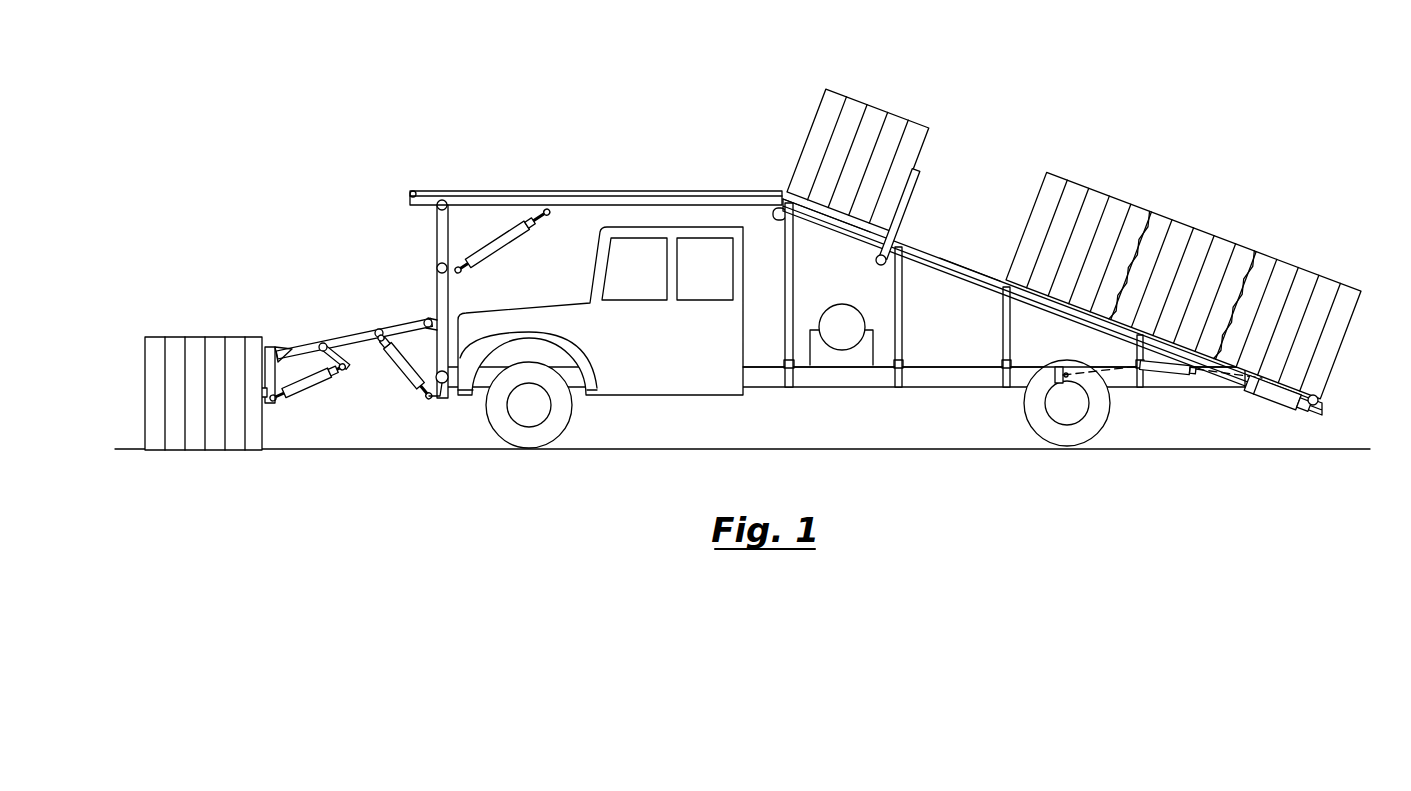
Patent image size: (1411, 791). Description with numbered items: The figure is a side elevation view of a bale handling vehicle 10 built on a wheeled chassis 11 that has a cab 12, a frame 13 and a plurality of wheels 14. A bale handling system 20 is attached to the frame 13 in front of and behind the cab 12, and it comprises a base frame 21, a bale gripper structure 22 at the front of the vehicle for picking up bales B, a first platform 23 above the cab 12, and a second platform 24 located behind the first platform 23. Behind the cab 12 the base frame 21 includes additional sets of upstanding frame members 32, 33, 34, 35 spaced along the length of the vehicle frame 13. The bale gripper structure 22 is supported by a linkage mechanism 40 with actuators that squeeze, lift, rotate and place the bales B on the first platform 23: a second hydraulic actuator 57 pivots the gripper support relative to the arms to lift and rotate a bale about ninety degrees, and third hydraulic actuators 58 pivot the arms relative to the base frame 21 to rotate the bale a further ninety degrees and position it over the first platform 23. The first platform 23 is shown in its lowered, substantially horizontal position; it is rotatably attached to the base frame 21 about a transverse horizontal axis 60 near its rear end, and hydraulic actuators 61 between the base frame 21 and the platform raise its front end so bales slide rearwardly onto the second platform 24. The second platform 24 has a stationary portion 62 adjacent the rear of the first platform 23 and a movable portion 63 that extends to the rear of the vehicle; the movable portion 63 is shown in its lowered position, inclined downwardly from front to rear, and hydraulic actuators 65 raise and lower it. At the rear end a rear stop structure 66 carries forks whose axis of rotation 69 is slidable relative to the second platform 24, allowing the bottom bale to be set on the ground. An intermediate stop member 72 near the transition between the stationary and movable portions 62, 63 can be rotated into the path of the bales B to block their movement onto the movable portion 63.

The bale handling vehicle 10 is at (380, 468).
The wheeled chassis 11 is at (765, 388).
The cab 12 is at (675, 362).
The frame 13 is at (968, 380).
The wheels 14 is at (538, 440).
The bale handling system 20 is at (360, 280).
The base frame 21 is at (437, 246).
The bale gripper structure 22 is at (233, 365).
The first platform 23 is at (530, 192).
The second platform 24 is at (943, 254).
The upstanding frame member 32 is at (793, 298).
The upstanding frame member 33 is at (900, 332).
The upstanding frame member 34 is at (1010, 336).
The upstanding frame member 35 is at (1137, 352).
The linkage mechanism 40 is at (358, 338).
The second hydraulic actuator 57 is at (333, 380).
The third hydraulic actuator 58 is at (406, 378).
The transverse horizontal axis 60 is at (778, 203).
The hydraulic actuator 61 is at (495, 248).
The stationary portion 62 is at (840, 222).
The movable portion 63 is at (965, 272).
The hydraulic actuator 65 is at (1170, 362).
The rear stop structure 66 is at (1320, 398).
The axis of rotation 69 is at (1315, 405).
The intermediate stop member 72 is at (905, 210).
The bale B is at (185, 345).